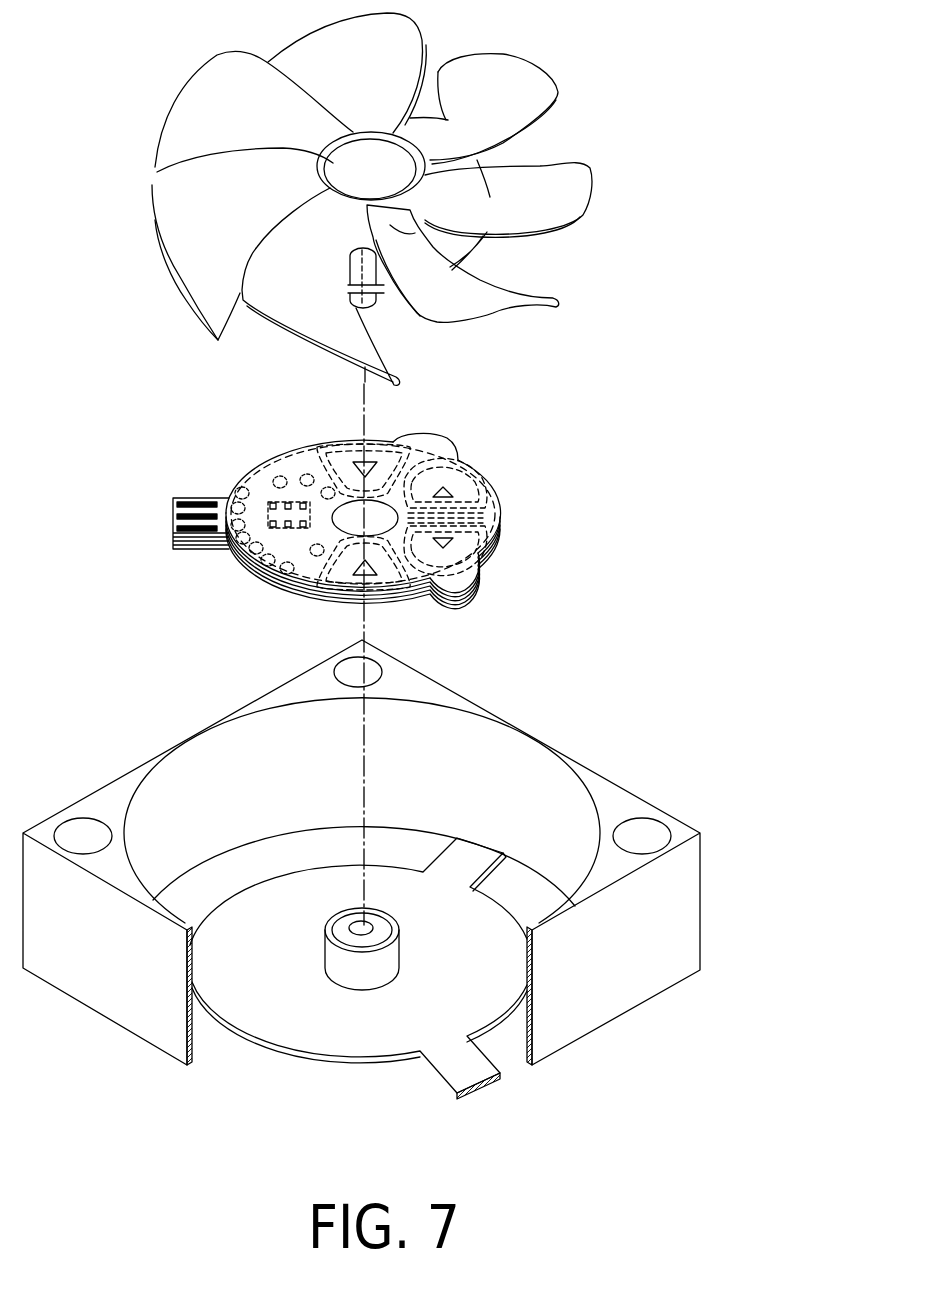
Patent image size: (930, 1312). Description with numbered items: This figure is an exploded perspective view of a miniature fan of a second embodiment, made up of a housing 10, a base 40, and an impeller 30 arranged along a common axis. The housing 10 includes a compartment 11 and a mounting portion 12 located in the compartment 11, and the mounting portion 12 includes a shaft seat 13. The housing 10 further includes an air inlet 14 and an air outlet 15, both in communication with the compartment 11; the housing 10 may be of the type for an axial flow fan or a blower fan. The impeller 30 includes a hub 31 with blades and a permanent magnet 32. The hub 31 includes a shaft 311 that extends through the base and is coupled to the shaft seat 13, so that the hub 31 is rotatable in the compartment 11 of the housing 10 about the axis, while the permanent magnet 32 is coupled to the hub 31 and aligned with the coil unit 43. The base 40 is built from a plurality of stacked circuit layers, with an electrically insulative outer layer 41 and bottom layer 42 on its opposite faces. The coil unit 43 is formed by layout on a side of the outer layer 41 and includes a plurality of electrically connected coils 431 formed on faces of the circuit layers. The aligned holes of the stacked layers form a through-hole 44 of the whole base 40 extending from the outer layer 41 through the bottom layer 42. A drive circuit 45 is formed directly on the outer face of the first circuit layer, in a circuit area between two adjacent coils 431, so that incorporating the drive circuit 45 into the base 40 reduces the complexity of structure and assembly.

The housing 10 is at (599, 717).
The compartment 11 is at (437, 777).
The mounting portion 12 is at (340, 1040).
The shaft seat 13 is at (345, 968).
The air inlet 14 is at (233, 720).
The air outlet 15 is at (230, 850).
The impeller 30 is at (605, 106).
The hub 31 is at (343, 160).
The permanent magnet 32 is at (483, 257).
The shaft 311 is at (407, 333).
The base 40 is at (549, 530).
The outer layer 41 is at (504, 509).
The bottom layer 42 is at (509, 563).
The coil unit 43 is at (472, 465).
The coils 431 is at (400, 434).
The through-hole 44 is at (345, 513).
The drive circuit 45 is at (270, 490).